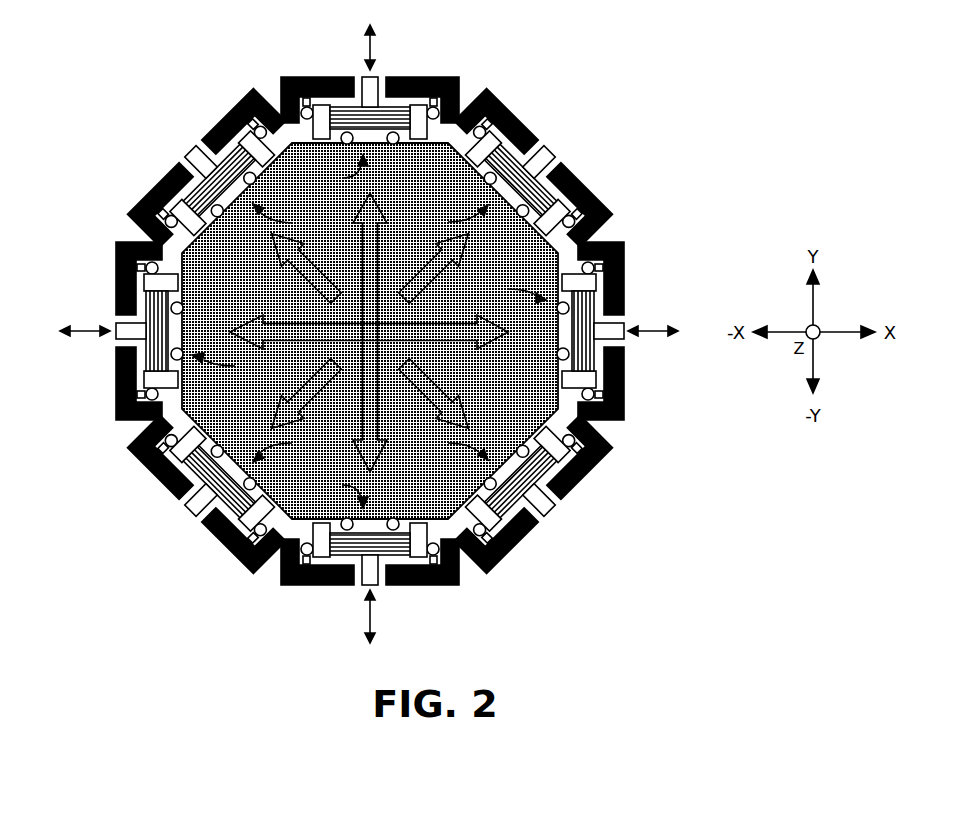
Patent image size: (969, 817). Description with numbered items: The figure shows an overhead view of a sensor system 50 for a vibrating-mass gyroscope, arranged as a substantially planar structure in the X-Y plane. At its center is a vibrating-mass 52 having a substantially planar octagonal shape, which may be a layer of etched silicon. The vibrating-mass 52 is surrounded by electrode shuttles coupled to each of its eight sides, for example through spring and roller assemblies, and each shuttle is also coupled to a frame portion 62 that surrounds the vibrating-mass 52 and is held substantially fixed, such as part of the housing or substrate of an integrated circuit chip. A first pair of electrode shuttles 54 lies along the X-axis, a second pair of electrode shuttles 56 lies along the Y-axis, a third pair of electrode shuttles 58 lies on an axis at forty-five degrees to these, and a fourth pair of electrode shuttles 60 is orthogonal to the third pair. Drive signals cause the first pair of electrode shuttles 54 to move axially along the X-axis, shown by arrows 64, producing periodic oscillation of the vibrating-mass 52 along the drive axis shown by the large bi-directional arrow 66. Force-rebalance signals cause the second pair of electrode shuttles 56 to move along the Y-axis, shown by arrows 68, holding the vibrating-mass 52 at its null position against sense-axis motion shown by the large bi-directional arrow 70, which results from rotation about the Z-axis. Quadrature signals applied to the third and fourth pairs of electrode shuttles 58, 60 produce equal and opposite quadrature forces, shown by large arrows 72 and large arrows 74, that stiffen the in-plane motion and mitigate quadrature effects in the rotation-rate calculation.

The sensor system 50 is at (113, 43).
The vibrating-mass 52 is at (370, 331).
The first pair of electrode shuttles 54 is at (340, 331).
The second pair of electrode shuttles 56 is at (369, 327).
The third pair of electrode shuttles 58 is at (370, 333).
The fourth pair of electrode shuttles 60 is at (370, 332).
The frame portion 62 is at (300, 77).
The arrows 64 is at (84, 330).
The large bi-directional arrow 66 is at (318, 326).
The arrows 68 is at (374, 48).
The large bi-directional arrow 70 is at (378, 256).
The large arrows 72 is at (417, 292).
The large arrows 74 is at (308, 262).